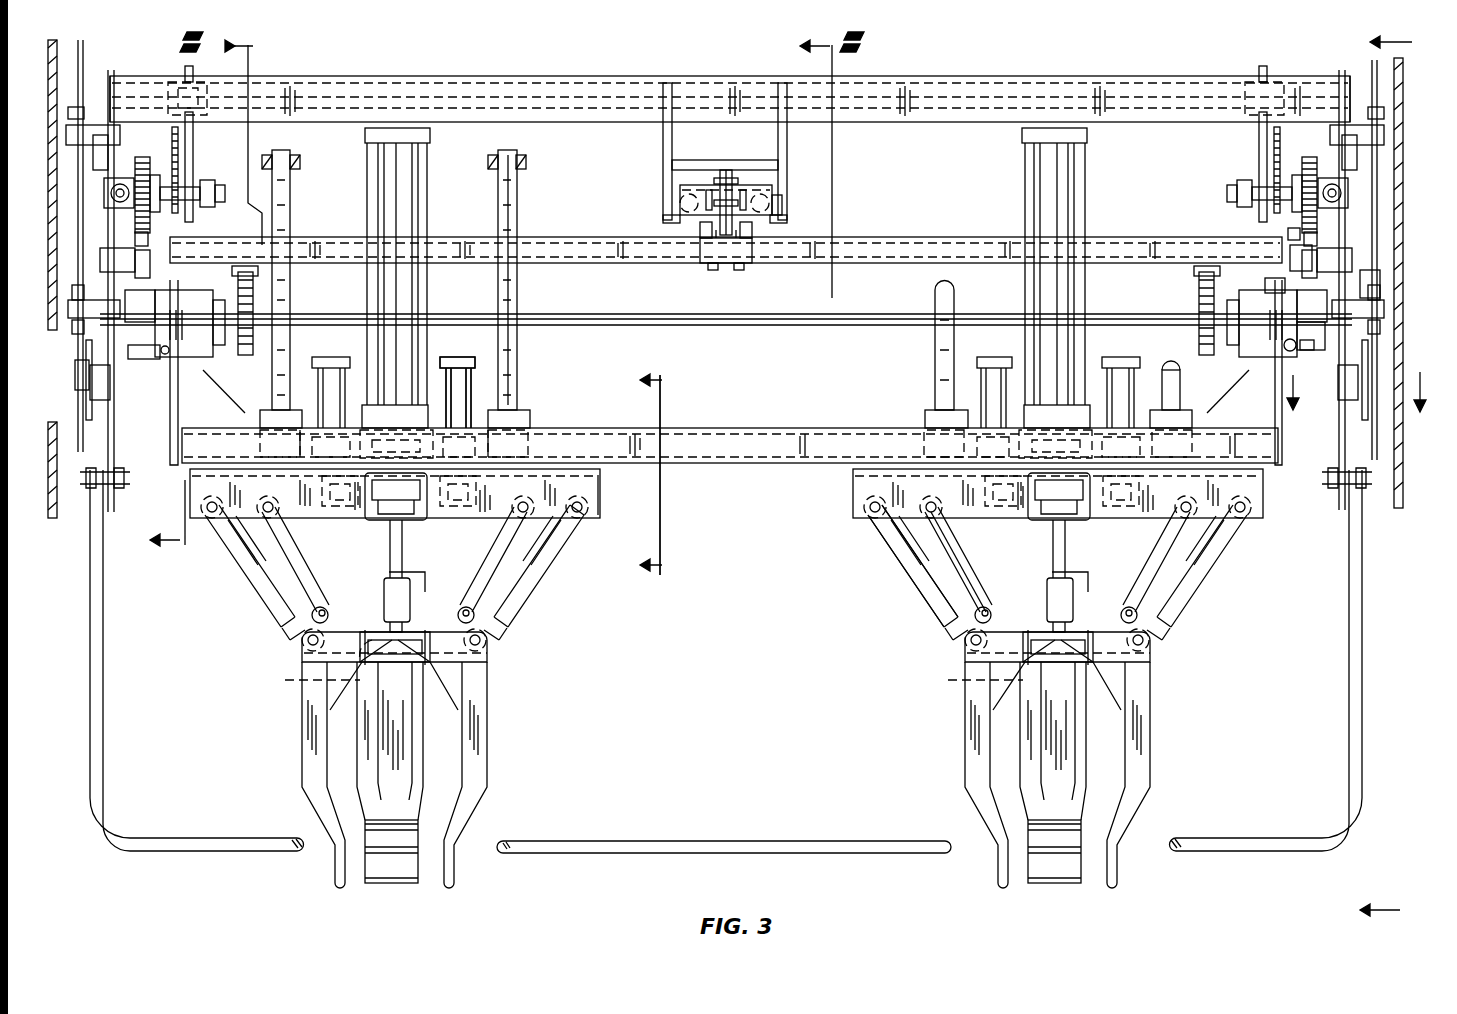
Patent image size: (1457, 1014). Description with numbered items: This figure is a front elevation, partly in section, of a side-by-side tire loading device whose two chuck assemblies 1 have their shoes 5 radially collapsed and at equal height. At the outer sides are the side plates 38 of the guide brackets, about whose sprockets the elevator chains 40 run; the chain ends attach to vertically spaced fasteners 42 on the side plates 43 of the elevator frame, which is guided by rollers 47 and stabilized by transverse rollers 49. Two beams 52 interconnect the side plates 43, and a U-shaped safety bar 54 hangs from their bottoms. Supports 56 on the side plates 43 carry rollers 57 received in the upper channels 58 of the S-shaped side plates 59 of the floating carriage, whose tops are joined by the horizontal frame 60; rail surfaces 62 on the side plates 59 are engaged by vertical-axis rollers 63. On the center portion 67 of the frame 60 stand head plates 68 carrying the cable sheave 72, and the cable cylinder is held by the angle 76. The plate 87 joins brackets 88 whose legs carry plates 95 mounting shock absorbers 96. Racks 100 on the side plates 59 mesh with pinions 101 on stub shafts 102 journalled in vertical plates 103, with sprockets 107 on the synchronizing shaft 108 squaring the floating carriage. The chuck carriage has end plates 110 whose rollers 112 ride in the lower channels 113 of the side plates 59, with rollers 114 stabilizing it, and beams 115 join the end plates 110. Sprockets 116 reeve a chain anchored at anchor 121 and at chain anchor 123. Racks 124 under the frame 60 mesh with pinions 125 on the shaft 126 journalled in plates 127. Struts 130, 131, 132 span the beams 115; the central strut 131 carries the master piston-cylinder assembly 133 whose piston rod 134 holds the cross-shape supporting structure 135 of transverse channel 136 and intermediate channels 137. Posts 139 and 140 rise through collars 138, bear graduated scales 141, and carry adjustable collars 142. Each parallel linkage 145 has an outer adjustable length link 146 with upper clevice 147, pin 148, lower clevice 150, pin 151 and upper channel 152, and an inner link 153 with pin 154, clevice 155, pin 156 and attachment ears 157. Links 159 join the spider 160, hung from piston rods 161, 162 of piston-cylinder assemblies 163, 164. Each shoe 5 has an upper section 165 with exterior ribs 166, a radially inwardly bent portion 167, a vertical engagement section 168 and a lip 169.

The chuck assembly 1 is at (565, 680).
The shoes 5 is at (500, 748).
The side plates 38 is at (65, 511).
The elevator chains 40 is at (83, 62).
The fasteners 42 is at (100, 112).
The side plates 43 is at (114, 410).
The roller 47 is at (90, 394).
The roller 49 is at (110, 176).
The beams 52 is at (490, 76).
The safety bar 54 is at (690, 840).
The supports 56 is at (100, 250).
The rollers 57 is at (153, 250).
The upper channels 58 is at (1288, 251).
The side plates 59 is at (1286, 234).
The horizontal frame 60 is at (965, 237).
The rail surfaces 62 is at (1292, 350).
The rollers 63 is at (75, 376).
The center portion 67 is at (726, 263).
The head plates 68 is at (708, 230).
The cable sheave 72 is at (724, 170).
The angle 76 is at (680, 192).
The plate 87 is at (752, 160).
The brackets 88 is at (663, 140).
The plate 95 is at (782, 190).
The shock absorbers 96 is at (680, 206).
The racks 100 is at (135, 236).
The pinions 101 is at (142, 155).
The stub shafts 102 is at (186, 194).
The vertical plates 103 is at (185, 142).
The sprockets 107 is at (175, 80).
The synchronizing shaft 108 is at (573, 76).
The end plates 110 is at (170, 450).
The rollers 112 is at (141, 294).
The lower channels 113 is at (1270, 287).
The rollers 114 is at (170, 282).
The horizontal beams 115 is at (746, 464).
The sprockets 116 is at (1300, 367).
The anchor 121 is at (1255, 362).
The chain anchor 123 is at (135, 359).
The racks 124 is at (260, 275).
The pinions 125 is at (255, 296).
The shaft 126 is at (772, 325).
The plates 127 is at (219, 370).
The strut 130 is at (260, 446).
The central strut 131 is at (376, 418).
The strut 132 is at (528, 437).
The master piston-cylinder assembly 133 is at (426, 192).
The piston rod 134 is at (1057, 405).
The cross-shape supporting structure 135 is at (618, 518).
The transverse channel 136 is at (600, 486).
The intermediate channels 137 is at (355, 529).
The collars 138 is at (530, 412).
The post 139 is at (290, 348).
The post 140 is at (519, 355).
The graduated scales 141 is at (514, 288).
The adjustable collars 142 is at (297, 152).
The parallel linkage 145 is at (920, 597).
The outer adjustable length link 146 is at (247, 572).
The upper clevice 147 is at (594, 518).
The pin 148 is at (598, 494).
The lower clevice 150 is at (491, 633).
The pin 151 is at (485, 651).
The upper channel 152 is at (483, 660).
The inner link 153 is at (486, 558).
The pin 154 is at (524, 500).
The clevice 155 is at (495, 518).
The pin 156 is at (380, 612).
The attachment ears 157 is at (636, 682).
The link 159 is at (390, 555).
The spider 160 is at (958, 562).
The piston rod 161 is at (986, 488).
The piston rod 162 is at (1139, 488).
The piston-cylinder assembly 163 is at (350, 368).
The piston-cylinder assembly 164 is at (456, 362).
The upper section 165 is at (315, 750).
The exterior ribs 166 is at (302, 723).
The radially inwardly bent portion 167 is at (315, 840).
The vertical engagement section 168 is at (330, 860).
The lip 169 is at (333, 885).